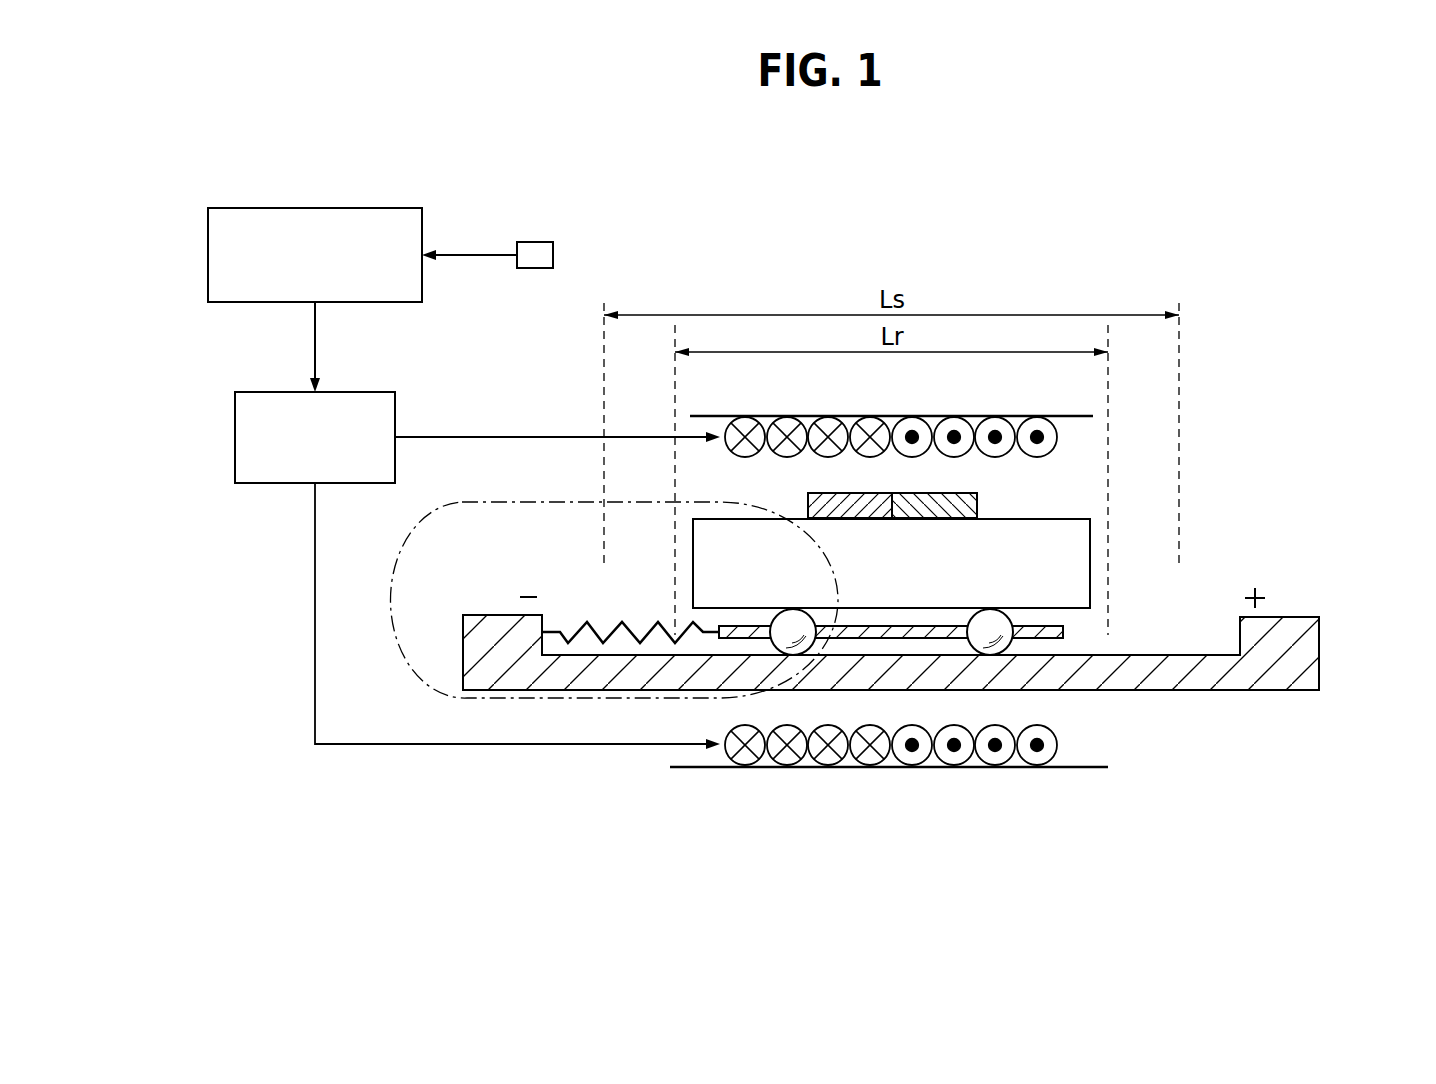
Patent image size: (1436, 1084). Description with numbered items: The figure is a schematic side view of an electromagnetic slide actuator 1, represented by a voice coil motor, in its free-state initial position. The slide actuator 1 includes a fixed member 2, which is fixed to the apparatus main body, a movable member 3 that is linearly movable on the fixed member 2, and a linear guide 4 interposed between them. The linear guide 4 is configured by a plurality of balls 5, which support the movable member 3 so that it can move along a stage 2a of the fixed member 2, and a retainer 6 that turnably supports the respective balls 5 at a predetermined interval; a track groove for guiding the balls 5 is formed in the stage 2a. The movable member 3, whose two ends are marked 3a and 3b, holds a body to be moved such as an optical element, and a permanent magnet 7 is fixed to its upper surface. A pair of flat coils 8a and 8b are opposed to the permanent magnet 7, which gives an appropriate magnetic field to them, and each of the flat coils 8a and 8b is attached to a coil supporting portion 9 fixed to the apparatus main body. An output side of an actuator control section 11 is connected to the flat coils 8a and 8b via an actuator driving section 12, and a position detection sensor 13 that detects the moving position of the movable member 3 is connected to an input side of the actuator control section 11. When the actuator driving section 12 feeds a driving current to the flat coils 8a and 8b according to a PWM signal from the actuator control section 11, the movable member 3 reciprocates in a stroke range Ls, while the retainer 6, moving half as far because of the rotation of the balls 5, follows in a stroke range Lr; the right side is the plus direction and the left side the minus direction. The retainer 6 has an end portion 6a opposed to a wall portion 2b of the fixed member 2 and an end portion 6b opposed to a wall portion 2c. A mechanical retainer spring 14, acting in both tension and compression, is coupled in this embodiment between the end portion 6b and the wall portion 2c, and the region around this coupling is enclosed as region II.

The slide actuator 1 is at (1200, 372).
The fixed member 2 is at (1319, 663).
The stage 2a is at (1069, 652).
The wall portion 2b is at (1236, 648).
The wall portion 2c is at (544, 648).
The movable member 3 is at (1028, 518).
The first end of movable body 3a is at (1090, 535).
The second end of movable body 3b is at (693, 535).
The linear guide 4 is at (982, 582).
The balls 5 is at (815, 620).
The retainer 6 is at (914, 627).
The end portion 6a is at (1063, 634).
The end portion 6b is at (718, 628).
The permanent magnet 7 is at (977, 524).
The flat coil 8a is at (1057, 437).
The flat coil 8b is at (1057, 745).
The coil supporting portion 9 is at (698, 416).
The actuator control section 11 is at (294, 208).
The actuator driving section 12 is at (360, 392).
The position detection sensor 13 is at (553, 255).
The retainer spring 14 is at (656, 634).
The region shown in FIG. 2 II is at (393, 625).